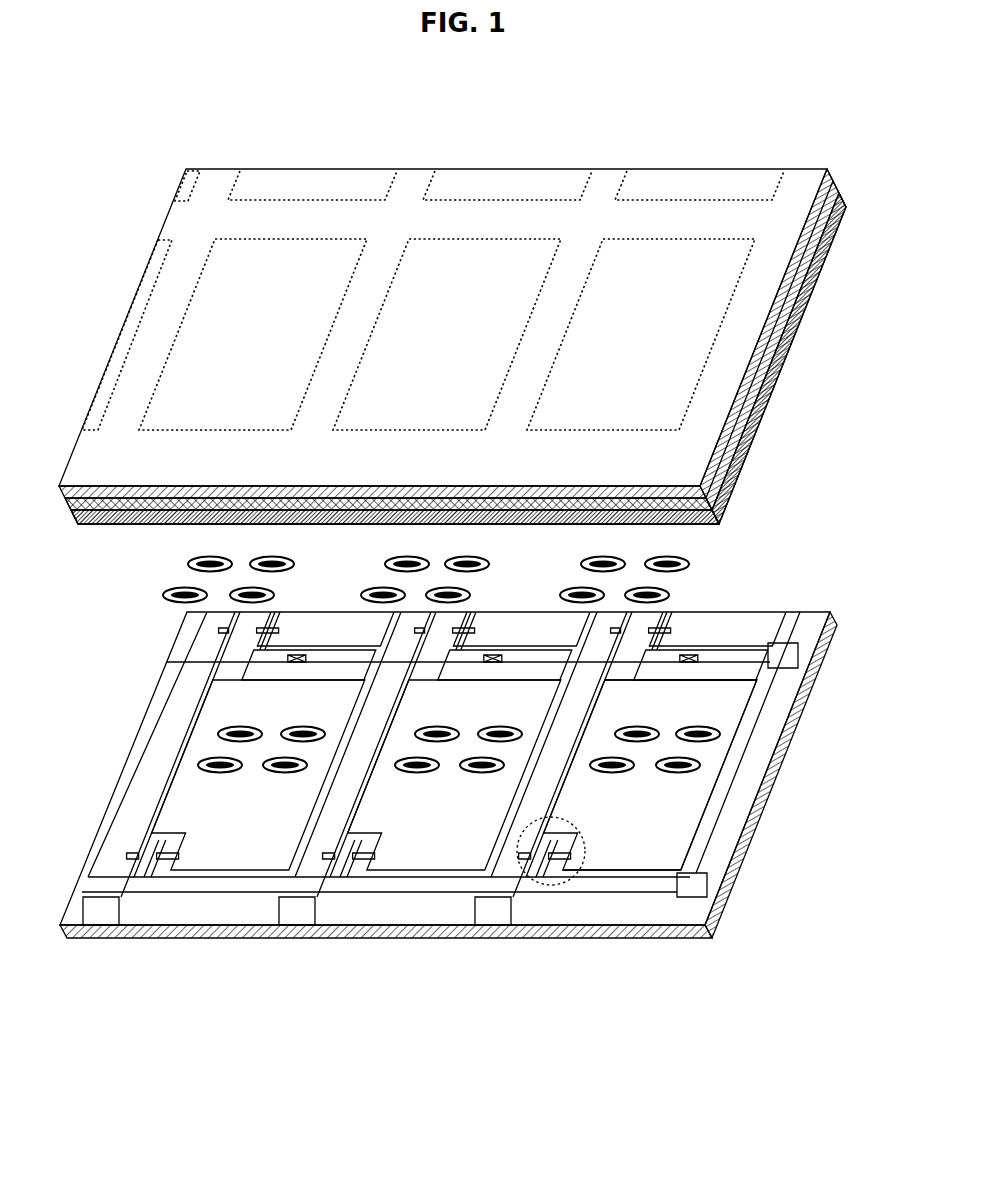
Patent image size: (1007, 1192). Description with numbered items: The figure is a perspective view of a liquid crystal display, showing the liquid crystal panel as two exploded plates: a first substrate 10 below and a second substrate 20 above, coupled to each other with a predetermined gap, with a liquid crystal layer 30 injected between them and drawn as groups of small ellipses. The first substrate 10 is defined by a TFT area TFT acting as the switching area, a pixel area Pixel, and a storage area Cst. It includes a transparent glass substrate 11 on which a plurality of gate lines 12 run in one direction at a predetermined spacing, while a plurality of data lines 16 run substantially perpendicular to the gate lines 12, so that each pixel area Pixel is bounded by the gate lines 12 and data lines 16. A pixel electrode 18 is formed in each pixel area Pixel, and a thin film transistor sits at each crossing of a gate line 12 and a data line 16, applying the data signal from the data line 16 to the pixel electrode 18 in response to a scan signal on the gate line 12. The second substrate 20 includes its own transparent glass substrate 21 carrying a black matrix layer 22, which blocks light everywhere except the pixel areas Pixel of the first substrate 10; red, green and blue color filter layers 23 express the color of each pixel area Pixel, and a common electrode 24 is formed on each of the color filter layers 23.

The first substrate 10 is at (463, 821).
The transparent glass substrate 11 is at (147, 933).
The gate lines 12 is at (357, 890).
The data lines 16 is at (490, 897).
The pixel electrode 18 is at (690, 813).
The second substrate 20 is at (600, 145).
The transparent glass substrate 21 is at (832, 171).
The black matrix layer 22 is at (213, 180).
The color filter layers 23 is at (333, 180).
The common electrode 24 is at (757, 430).
The liquid crystal layer 30 is at (678, 569).
The storage area Cst is at (752, 680).
The pixel area Pixel is at (727, 743).
The TFT area TFT is at (550, 885).